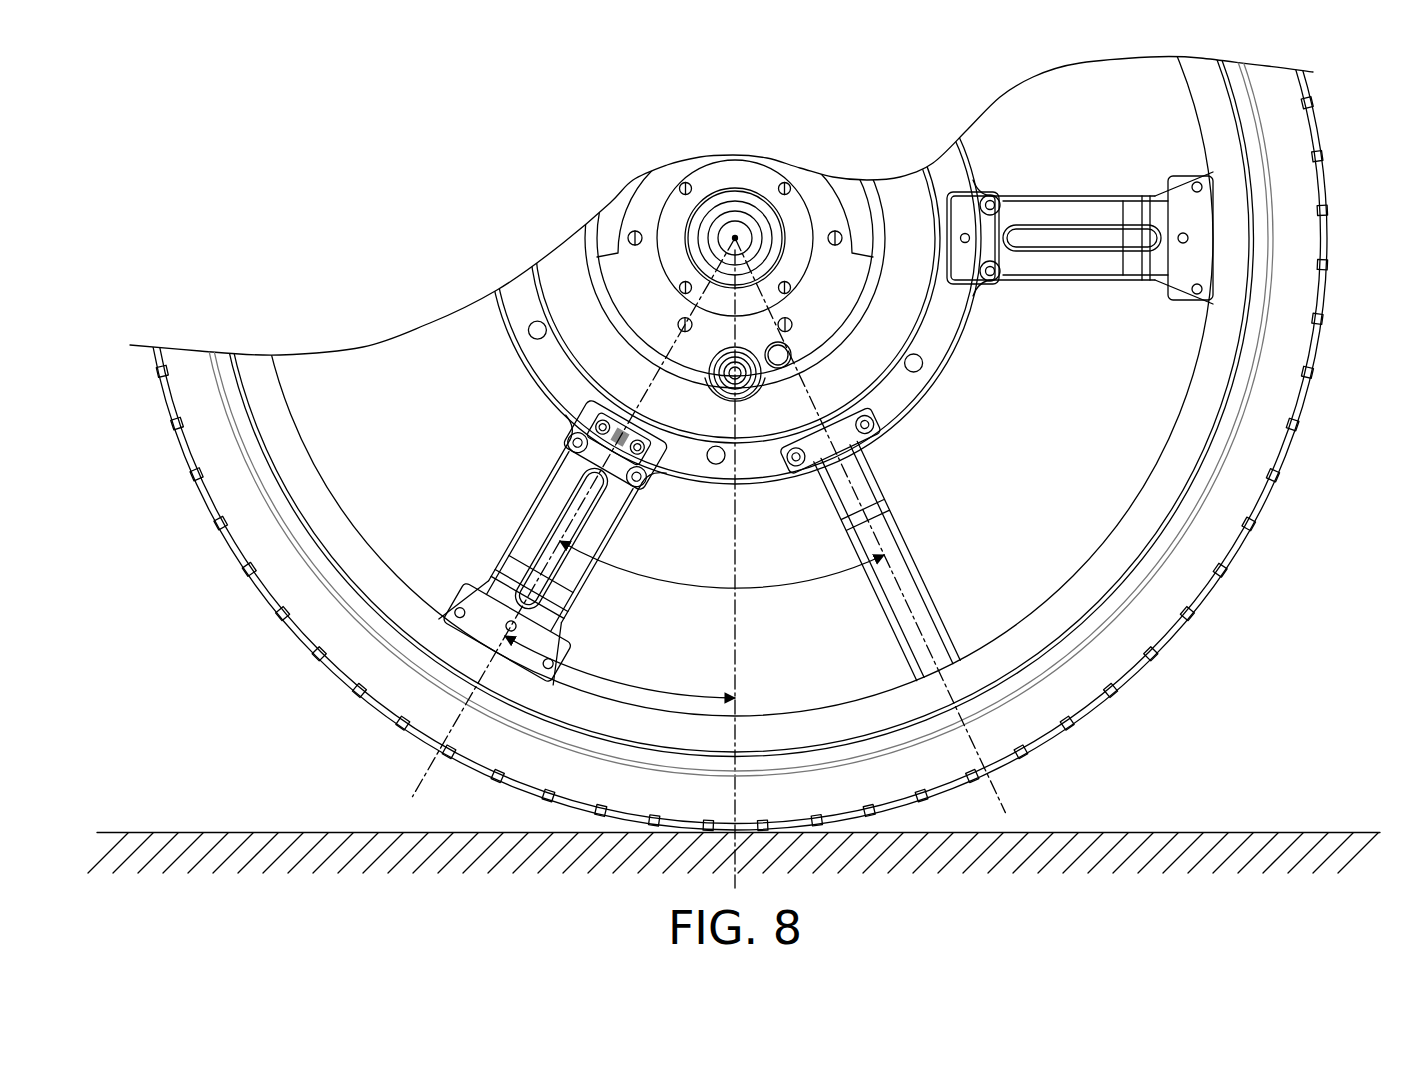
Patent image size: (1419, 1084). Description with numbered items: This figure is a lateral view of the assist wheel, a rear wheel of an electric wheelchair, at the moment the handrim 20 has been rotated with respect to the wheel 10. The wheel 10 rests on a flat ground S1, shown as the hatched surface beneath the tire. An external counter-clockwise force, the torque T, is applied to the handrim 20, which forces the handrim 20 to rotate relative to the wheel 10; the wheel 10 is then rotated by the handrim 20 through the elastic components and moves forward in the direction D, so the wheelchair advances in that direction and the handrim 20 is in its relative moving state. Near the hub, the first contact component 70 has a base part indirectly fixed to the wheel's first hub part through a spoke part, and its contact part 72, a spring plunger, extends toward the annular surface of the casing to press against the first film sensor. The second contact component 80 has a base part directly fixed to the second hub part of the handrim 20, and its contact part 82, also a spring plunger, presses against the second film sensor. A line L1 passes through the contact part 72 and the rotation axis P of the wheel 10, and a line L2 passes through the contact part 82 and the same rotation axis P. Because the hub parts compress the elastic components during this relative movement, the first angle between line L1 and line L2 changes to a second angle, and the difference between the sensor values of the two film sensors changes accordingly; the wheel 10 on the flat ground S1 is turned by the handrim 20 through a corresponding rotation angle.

The wheel 10 is at (1185, 590).
The handrim 20 is at (1055, 612).
The first contact component 70 is at (596, 446).
The contact part 72 is at (616, 449).
The second contact component 80 is at (804, 473).
The contact part 82 is at (838, 443).
The rotation axis P is at (737, 236).
The direction D is at (1405, 240).
The torque T is at (1170, 379).
The line L1 is at (412, 778).
The line L2 is at (1008, 803).
The flat ground S1 is at (216, 852).